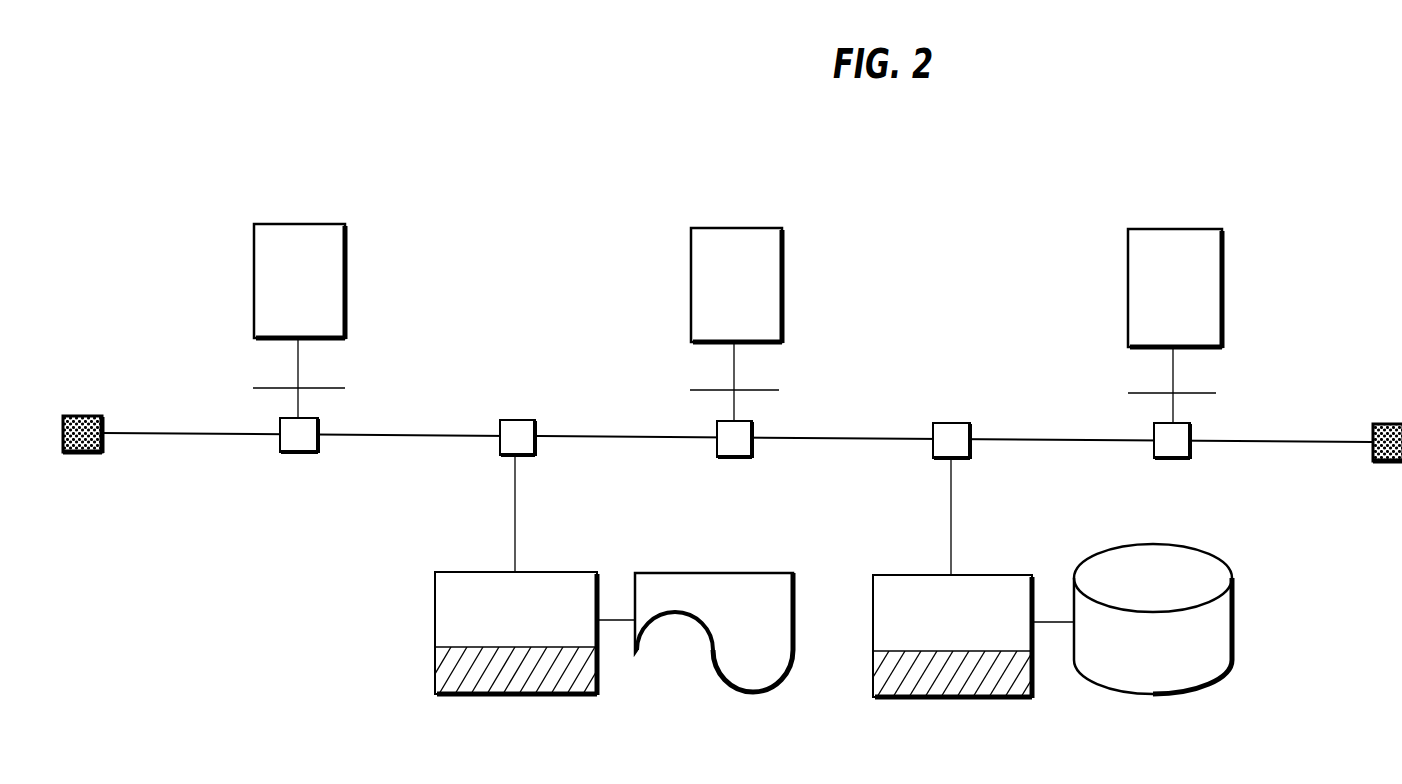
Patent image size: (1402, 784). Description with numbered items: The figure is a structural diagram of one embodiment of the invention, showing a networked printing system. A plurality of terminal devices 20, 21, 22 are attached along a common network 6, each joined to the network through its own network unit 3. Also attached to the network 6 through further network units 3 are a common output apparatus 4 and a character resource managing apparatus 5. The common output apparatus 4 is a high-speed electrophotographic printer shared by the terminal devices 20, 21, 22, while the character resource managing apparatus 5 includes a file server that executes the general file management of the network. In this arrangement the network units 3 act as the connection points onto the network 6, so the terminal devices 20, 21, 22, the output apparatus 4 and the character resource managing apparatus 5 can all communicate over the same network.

The network unit 3 is at (302, 454).
The common output apparatus 4 is at (532, 696).
The character resource managing apparatus 5 is at (977, 698).
The network 6 is at (838, 458).
The terminal device 20 is at (345, 268).
The terminal device 21 is at (782, 272).
The terminal device 22 is at (1222, 276).